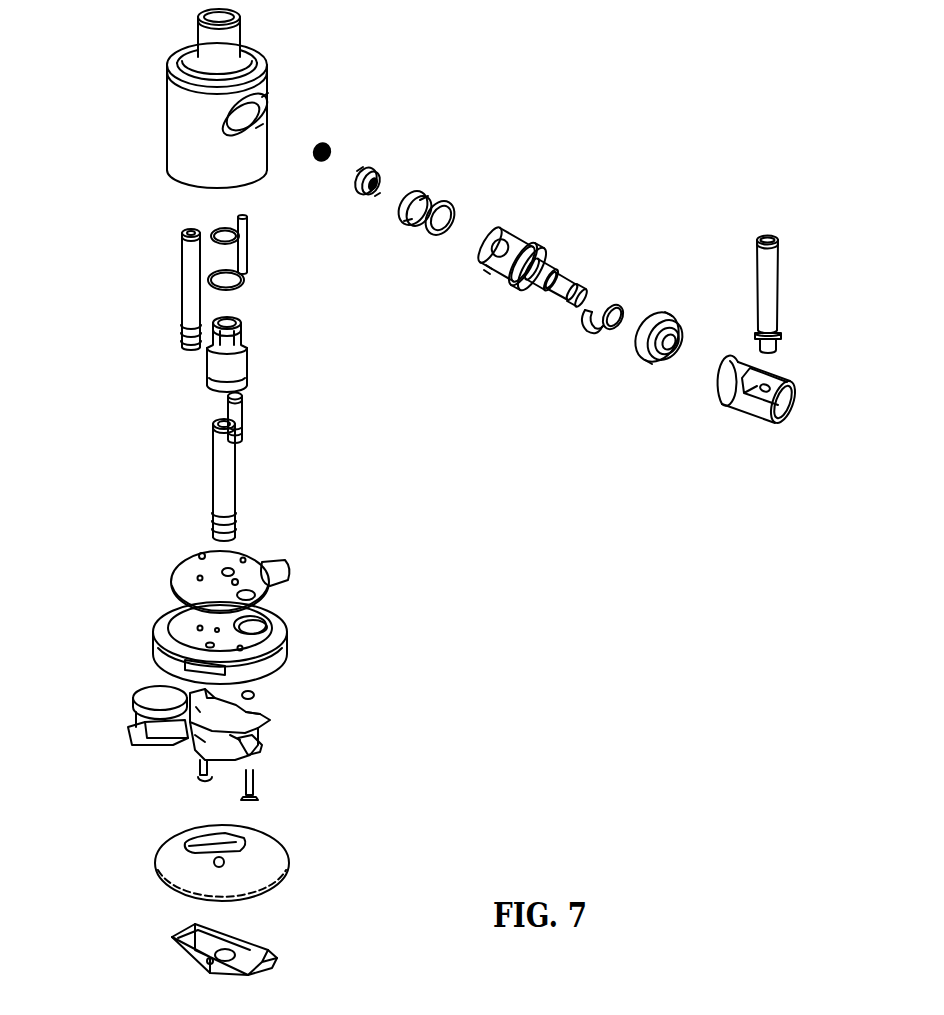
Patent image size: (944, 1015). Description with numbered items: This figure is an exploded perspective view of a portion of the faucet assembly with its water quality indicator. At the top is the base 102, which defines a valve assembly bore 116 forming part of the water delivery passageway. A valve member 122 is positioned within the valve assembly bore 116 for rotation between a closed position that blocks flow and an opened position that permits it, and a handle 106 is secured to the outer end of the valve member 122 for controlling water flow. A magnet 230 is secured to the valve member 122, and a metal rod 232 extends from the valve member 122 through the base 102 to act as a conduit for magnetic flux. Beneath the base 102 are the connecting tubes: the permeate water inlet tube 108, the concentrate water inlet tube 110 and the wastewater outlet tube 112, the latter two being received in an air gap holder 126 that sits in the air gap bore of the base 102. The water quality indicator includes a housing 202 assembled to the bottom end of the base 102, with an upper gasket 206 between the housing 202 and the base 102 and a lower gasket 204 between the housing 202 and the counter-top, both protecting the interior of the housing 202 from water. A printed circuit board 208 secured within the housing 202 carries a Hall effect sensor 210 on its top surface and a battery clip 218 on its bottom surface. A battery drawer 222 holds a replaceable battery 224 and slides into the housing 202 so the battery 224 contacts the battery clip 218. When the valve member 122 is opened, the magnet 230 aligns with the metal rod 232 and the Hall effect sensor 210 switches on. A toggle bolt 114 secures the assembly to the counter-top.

The base 102 is at (172, 97).
The valve assembly bore 116 is at (264, 103).
The valve member 122 is at (544, 241).
The magnet 230 is at (590, 340).
The handle 106 is at (782, 282).
The permeate water inlet tube 108 is at (180, 287).
The metal rod 232 is at (250, 250).
The air gap holder 126 is at (207, 360).
The wastewater outlet tube 112 is at (225, 407).
The concentrate water inlet tube 110 is at (210, 483).
The upper gasket 206 is at (277, 572).
The housing 202 is at (290, 630).
The replaceable battery 224 is at (133, 708).
The battery drawer 222 is at (140, 745).
The printed circuit board 208 is at (265, 722).
The Hall effect sensor 210 is at (255, 722).
The battery clip 218 is at (262, 751).
The lower gasket 204 is at (152, 874).
The toggle bolt 114 is at (168, 938).